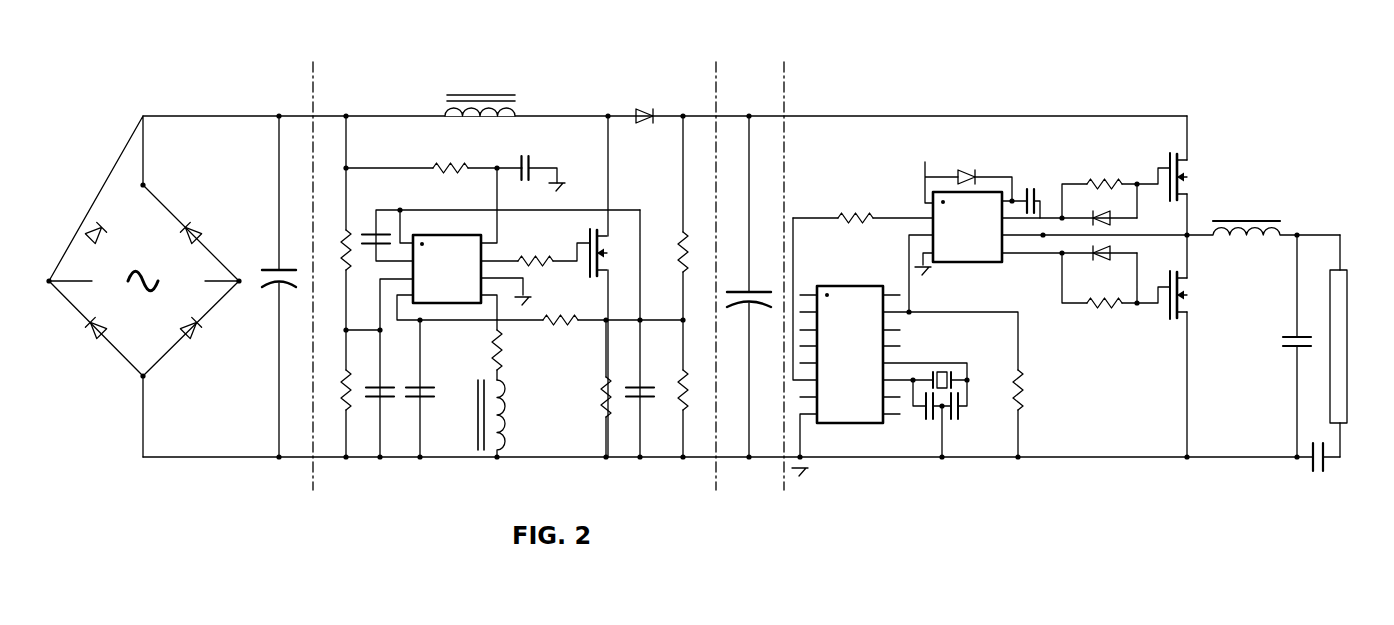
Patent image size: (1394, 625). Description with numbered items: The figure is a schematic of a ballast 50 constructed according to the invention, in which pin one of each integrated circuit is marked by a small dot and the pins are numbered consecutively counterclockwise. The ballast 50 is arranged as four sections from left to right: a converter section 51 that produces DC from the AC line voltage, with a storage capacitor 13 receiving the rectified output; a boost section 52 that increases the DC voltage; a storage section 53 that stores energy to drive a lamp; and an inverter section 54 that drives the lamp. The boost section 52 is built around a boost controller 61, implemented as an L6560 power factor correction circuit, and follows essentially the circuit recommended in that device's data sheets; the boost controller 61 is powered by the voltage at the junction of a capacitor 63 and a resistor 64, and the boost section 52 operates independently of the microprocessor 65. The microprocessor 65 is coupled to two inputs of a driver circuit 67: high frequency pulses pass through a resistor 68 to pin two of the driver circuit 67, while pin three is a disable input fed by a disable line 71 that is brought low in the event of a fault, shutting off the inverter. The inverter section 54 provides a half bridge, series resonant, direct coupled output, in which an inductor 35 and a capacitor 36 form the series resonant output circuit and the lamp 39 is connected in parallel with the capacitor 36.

The ballast 50 is at (138, 78).
The converter section 51 is at (238, 80).
The storage capacitor 13 is at (269, 266).
The boost section 52 is at (482, 78).
The boost controller 61 is at (437, 233).
The capacitor 63 is at (530, 157).
The resistor 64 is at (447, 162).
The storage section 53 is at (743, 90).
The inverter section 54 is at (1061, 95).
The microprocessor 65 is at (847, 284).
The driver circuit 67 is at (993, 264).
The resistor 68 is at (851, 212).
The disable line 71 is at (911, 302).
The inductor 35 is at (1264, 221).
The capacitor 36 is at (1290, 347).
The lamp 39 is at (1347, 308).